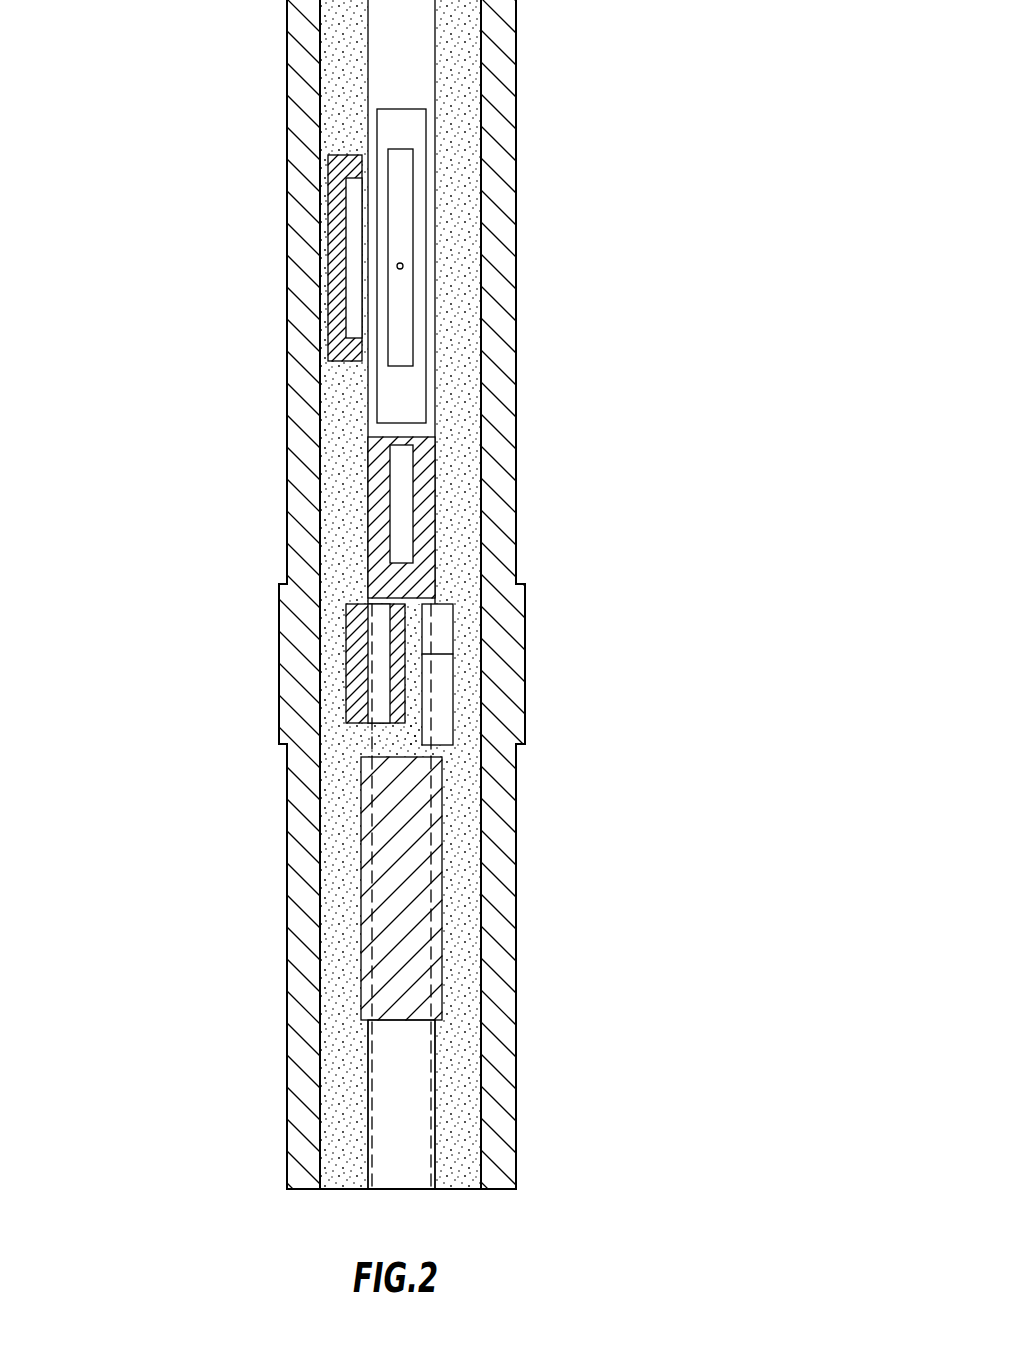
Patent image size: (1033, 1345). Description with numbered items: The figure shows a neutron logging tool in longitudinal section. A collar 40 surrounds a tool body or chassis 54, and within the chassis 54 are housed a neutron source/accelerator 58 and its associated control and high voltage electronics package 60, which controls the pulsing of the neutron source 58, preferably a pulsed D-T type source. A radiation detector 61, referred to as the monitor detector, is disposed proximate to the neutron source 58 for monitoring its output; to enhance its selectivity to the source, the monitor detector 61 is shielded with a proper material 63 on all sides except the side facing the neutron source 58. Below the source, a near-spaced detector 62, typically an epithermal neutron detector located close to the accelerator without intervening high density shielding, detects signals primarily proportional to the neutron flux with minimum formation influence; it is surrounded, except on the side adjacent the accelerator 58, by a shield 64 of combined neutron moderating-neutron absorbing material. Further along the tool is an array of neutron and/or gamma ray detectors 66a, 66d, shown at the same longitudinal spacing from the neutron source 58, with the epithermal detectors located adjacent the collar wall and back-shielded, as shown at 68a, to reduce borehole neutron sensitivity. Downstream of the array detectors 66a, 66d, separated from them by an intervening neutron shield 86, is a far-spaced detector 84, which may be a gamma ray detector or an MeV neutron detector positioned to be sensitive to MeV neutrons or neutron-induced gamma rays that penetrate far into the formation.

The collar 40 is at (297, 265).
The tool body or chassis 54 is at (455, 348).
The neutron source/accelerator 58 is at (415, 198).
The control and high voltage electronics package 60 is at (408, 130).
The radiation detector (monitor detector) 61 is at (348, 220).
The near-spaced detector 62 is at (398, 504).
The shielding material 63 is at (340, 165).
The shield 64 is at (427, 480).
The neutron and/or gamma ray detector 66a is at (375, 676).
The neutron and/or gamma ray detector 66d is at (436, 639).
The back-shielding 68a is at (346, 627).
The far-spaced detector 84 is at (438, 1102).
The neutron shield 86 is at (433, 869).